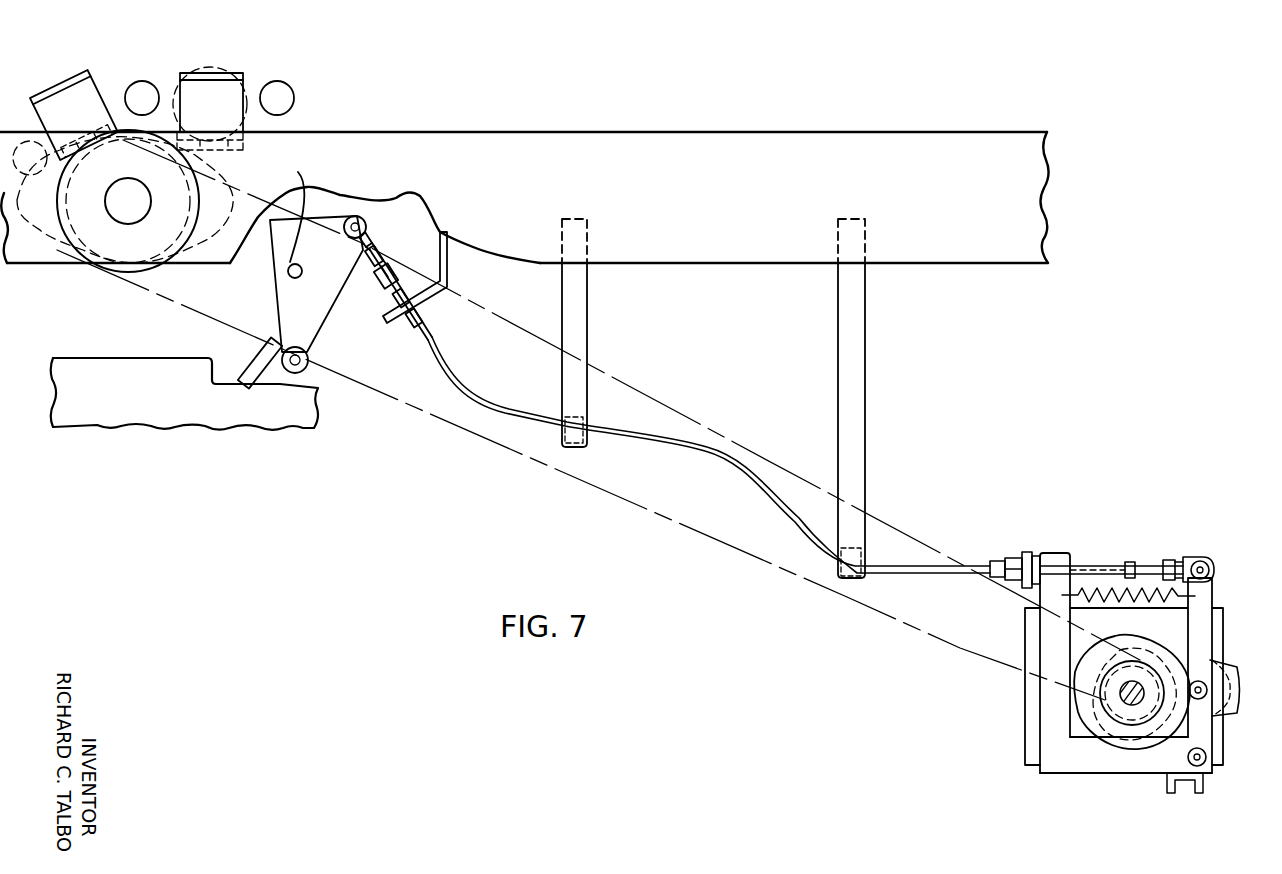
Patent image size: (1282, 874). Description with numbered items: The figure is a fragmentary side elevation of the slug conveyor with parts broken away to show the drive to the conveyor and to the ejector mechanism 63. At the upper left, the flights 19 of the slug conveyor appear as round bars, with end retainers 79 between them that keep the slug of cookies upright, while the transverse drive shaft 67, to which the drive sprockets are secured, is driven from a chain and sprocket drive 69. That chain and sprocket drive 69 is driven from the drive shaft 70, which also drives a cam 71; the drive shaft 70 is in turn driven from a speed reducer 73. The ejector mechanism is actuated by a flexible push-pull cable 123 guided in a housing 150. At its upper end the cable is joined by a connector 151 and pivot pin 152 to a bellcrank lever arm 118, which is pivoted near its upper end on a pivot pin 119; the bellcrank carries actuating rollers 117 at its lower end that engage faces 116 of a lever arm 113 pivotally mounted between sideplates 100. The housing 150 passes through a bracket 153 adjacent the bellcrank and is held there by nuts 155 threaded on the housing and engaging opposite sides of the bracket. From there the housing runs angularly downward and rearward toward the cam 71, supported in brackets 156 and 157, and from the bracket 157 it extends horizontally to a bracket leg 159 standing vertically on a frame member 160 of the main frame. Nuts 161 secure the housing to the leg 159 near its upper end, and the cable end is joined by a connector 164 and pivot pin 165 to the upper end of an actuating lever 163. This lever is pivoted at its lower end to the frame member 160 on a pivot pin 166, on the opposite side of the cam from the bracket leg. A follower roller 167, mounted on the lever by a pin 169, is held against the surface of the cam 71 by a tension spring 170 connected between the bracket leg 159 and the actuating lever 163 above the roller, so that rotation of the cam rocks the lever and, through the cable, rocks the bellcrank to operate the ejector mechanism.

The flights 19 is at (143, 81).
The end retainers 79 is at (77, 70).
The drive shaft 67 is at (131, 212).
The pivot pin 119 is at (293, 214).
The pivot pin 152 is at (357, 215).
The connector 151 is at (368, 232).
The bracket 153 is at (449, 261).
The bracket 156 is at (589, 283).
The flexible cable 123 is at (382, 292).
The nuts 155 is at (392, 304).
The lever arm 118 is at (338, 332).
The actuating rollers 117 is at (312, 361).
The lever arm 113 is at (257, 352).
The faces 116 is at (280, 388).
The sideplate 100 is at (177, 412).
The ejector mechanism 63 is at (284, 414).
The chain and sprocket drive 69 is at (481, 437).
The housing 150 is at (692, 440).
The bracket 157 is at (867, 535).
The nuts 161 is at (1030, 548).
The bracket leg 159 is at (1061, 553).
The tension spring 170 is at (1105, 589).
The connector 164 is at (1188, 557).
The actuating lever 163 is at (1206, 556).
The pivot pin 165 is at (1210, 577).
The speed reducer 73 is at (1025, 637).
The cam 71 is at (1157, 652).
The follower roller 167 is at (1218, 661).
The drive shaft 70 is at (1120, 695).
The pin 169 is at (1210, 710).
The frame member 160 is at (1092, 754).
The pivot pin 166 is at (1202, 766).